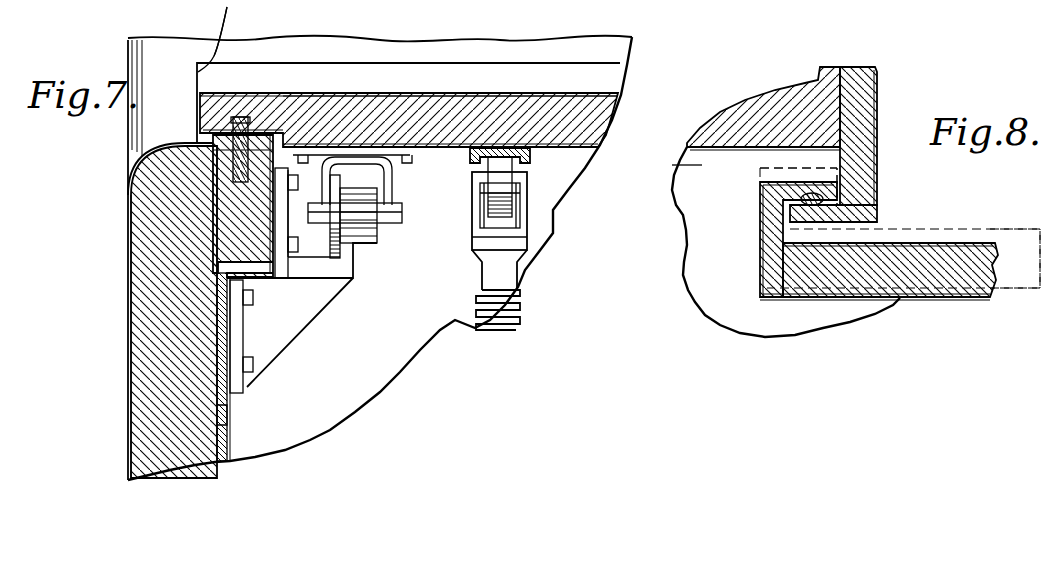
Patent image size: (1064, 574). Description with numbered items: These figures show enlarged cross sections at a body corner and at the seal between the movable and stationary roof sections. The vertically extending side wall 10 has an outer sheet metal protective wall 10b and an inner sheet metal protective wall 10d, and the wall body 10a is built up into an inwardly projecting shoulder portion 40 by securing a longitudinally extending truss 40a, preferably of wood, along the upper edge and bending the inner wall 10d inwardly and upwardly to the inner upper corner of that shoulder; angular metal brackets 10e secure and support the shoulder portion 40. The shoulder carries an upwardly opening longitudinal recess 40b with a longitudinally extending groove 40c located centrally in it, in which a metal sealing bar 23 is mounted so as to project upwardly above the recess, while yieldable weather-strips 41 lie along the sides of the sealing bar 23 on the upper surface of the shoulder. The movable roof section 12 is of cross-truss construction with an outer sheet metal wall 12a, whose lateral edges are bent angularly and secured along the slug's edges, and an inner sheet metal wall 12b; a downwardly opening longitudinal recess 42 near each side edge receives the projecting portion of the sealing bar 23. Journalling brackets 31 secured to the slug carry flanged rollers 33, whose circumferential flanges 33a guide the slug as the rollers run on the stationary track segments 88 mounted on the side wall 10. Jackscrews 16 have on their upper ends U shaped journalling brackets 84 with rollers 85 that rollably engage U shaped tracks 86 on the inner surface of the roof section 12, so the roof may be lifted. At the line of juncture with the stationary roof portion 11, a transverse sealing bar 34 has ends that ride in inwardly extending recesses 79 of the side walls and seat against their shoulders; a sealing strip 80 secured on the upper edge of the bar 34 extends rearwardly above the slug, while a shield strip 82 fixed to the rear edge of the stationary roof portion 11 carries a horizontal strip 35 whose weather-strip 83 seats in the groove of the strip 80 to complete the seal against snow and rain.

In FIG. 7, the side wall 10 is at (125, 268).
In FIG. 7, the panel body 10a is at (167, 292).
In FIG. 7, the outer sheet metal protective wall 10b is at (127, 343).
In FIG. 7, the inner sheet metal protective wall 10d is at (230, 428).
In FIG. 7, the angular metal bracket 10e is at (217, 415).
In FIG. 8, the stationary roof portion 11 is at (768, 93).
In FIG. 7, the movable roof section 12 is at (590, 137).
In FIG. 8, the movable roof section 12 is at (952, 255).
In FIG. 7, the outer sheet metal wall 12a is at (597, 95).
In FIG. 8, the outer sheet metal wall 12a is at (992, 243).
In FIG. 7, the inner sheet metal wall 12b is at (540, 153).
In FIG. 8, the inner sheet metal wall 12b is at (941, 300).
In FIG. 7, the jackscrew 16 is at (522, 307).
In FIG. 7, the metal sealing bar 23 is at (287, 93).
In FIG. 7, the journalling bracket 31 is at (394, 184).
In FIG. 7, the flanged roller 33 is at (363, 230).
In FIG. 7, the circumferential flange 33a is at (338, 181).
In FIG. 7, the sealing bar 34 is at (613, 78).
In FIG. 8, the sealing bar 34 is at (760, 240).
In FIG. 8, the horizontal strip 35 is at (873, 217).
In FIG. 7, the inwardly projecting portion 40 is at (226, 208).
In FIG. 7, the longitudinally extending truss 40a is at (258, 268).
In FIG. 7, the longitudinal recess 40b is at (230, 182).
In FIG. 7, the longitudinally extending groove 40c is at (228, 201).
In FIG. 7, the weather-strip 41 is at (233, 148).
In FIG. 7, the longitudinal recess 42 is at (240, 115).
In FIG. 8, the inwardly extending recess 79 is at (672, 165).
In FIG. 8, the sealing strip 80 is at (760, 188).
In FIG. 8, the shield strip 82 is at (867, 157).
In FIG. 8, the weather-strip 83 is at (822, 200).
In FIG. 7, the U shaped journalling bracket 84 is at (523, 223).
In FIG. 7, the roller 85 is at (520, 195).
In FIG. 7, the U shaped track 86 is at (512, 172).
In FIG. 7, the track segment 88 is at (320, 270).